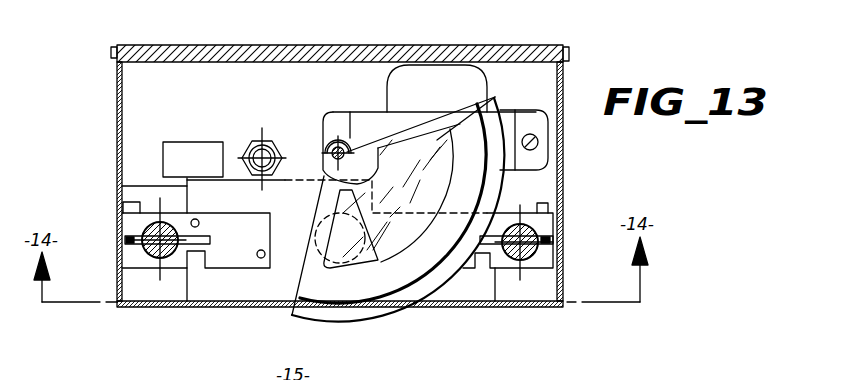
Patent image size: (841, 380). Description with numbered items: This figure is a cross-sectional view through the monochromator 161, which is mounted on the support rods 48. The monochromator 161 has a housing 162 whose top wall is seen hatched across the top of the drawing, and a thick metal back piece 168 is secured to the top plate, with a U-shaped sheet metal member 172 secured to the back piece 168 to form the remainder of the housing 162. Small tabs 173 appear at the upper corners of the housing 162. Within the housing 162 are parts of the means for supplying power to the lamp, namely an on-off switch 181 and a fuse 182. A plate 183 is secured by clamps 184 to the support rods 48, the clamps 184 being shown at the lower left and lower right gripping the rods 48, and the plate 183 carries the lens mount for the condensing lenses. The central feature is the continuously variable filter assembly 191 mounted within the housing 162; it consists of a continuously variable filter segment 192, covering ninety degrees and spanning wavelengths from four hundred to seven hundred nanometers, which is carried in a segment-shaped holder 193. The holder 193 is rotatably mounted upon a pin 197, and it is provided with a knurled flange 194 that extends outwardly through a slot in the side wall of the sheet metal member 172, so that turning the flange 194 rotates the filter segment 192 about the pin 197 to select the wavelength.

The monochromator 161 is at (476, 33).
The housing 162 is at (219, 19).
The thick metal back piece 168 is at (425, 34).
The U-shaped sheet metal member 172 is at (565, 158).
The flange tabs 173 is at (110, 52).
The on-off switch 181 is at (186, 146).
The fuse 182 is at (278, 108).
The plate 183 is at (122, 186).
The clamps 184 is at (230, 260).
The continuously variable filter assembly 191 is at (383, 128).
The continuously variable filter segment 192 is at (486, 103).
The holder 193 is at (386, 278).
The knurled flange 194 is at (314, 318).
The pin 197 is at (343, 152).
The support rods 48 is at (148, 247).